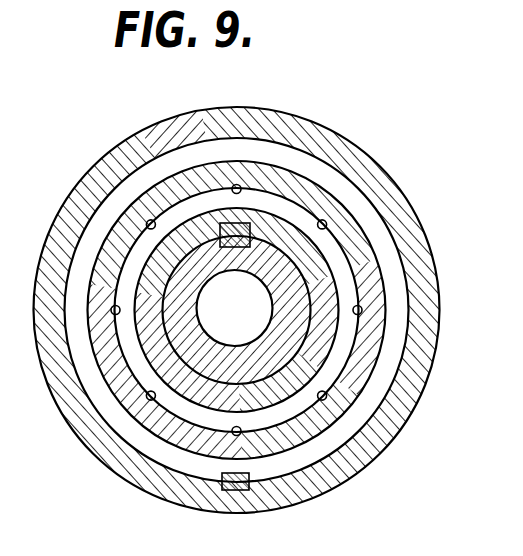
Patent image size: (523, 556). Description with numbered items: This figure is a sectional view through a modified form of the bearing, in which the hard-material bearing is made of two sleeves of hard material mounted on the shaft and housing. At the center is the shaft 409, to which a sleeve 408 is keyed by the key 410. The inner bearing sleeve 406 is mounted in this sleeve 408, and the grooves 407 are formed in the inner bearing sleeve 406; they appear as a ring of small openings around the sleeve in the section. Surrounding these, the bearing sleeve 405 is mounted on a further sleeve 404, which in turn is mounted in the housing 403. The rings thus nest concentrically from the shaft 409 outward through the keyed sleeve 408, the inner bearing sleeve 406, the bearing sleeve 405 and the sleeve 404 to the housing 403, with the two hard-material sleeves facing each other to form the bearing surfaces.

The housing 403 is at (253, 120).
The sleeve 404 is at (288, 155).
The bearing sleeve 405 is at (313, 192).
The inner bearing sleeve 406 is at (323, 237).
The grooves 407 is at (236, 186).
The sleeve 408 is at (315, 272).
The shaft 409 is at (203, 343).
The key 410 is at (230, 247).